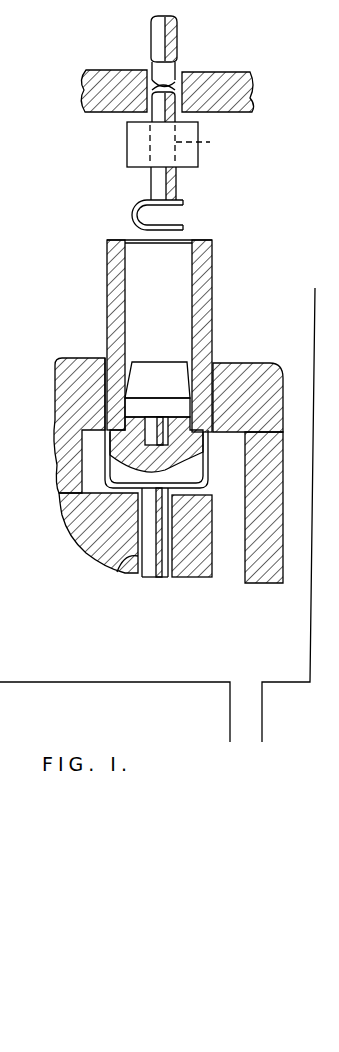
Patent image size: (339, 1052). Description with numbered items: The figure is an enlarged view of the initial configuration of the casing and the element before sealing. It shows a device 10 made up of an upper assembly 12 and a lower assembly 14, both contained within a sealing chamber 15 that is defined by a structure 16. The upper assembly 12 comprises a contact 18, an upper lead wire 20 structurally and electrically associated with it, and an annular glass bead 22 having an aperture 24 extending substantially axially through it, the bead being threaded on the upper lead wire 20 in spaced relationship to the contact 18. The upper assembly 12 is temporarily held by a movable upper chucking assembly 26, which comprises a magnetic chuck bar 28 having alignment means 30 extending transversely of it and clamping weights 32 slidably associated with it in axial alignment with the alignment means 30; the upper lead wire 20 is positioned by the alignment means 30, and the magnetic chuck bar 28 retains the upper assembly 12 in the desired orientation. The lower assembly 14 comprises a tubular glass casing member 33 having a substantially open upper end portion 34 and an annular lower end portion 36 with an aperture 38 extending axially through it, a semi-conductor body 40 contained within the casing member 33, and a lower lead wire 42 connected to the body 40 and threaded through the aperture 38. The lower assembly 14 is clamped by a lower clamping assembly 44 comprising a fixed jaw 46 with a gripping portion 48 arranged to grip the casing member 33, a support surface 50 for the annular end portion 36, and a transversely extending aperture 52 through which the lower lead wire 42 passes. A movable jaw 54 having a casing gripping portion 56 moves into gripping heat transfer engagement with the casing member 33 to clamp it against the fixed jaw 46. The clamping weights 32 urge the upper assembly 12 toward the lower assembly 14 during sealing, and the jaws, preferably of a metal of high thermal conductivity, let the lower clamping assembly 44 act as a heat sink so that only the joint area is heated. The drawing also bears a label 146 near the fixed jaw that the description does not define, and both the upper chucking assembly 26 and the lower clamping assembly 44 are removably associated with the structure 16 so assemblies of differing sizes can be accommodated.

The device 10 is at (196, 320).
The upper assembly 12 is at (174, 161).
The lower assembly 14 is at (196, 336).
The sealing chamber 15 is at (64, 46).
The structure 16 is at (311, 303).
The contact 18 is at (133, 213).
The upper lead wire 20 is at (180, 181).
The annular glass bead 22 is at (127, 149).
The aperture 24 is at (193, 145).
The upper chucking assembly 26 is at (219, 66).
The magnetic chuck bar 28 is at (251, 74).
The alignment means 30 is at (176, 97).
The clamping weights 32 is at (181, 31).
The tubular glass casing member 33 is at (212, 336).
The open upper end portion 34 is at (191, 250).
The annular lower end portion 36 is at (210, 475).
The aperture 38 is at (172, 442).
The semi-conductor body 40 is at (165, 362).
The lower lead wire 42 is at (167, 576).
The lower clamping assembly 44 is at (211, 605).
The fixed jaw 46 is at (60, 512).
The gripping portion 48 is at (92, 384).
The support surface 50 is at (206, 498).
The transversely extending aperture 52 is at (120, 562).
The movable jaw 54 is at (269, 525).
The casing gripping portion 56 is at (219, 376).
The cavity 146 is at (82, 455).